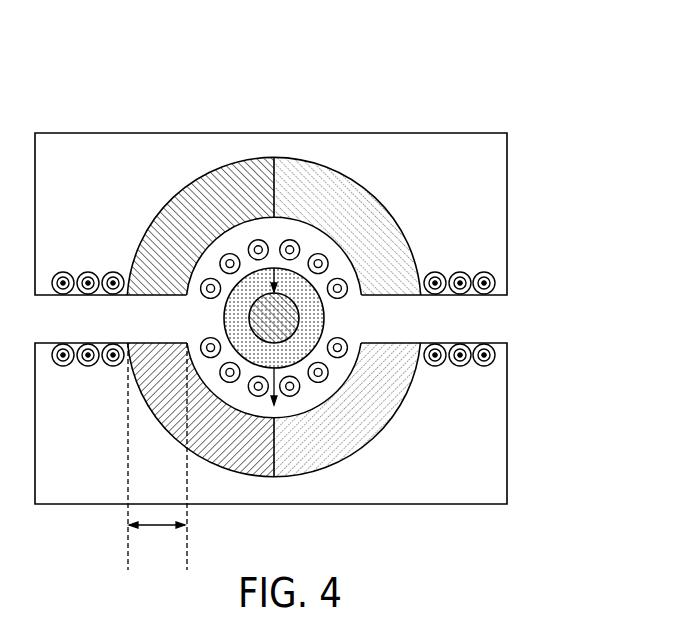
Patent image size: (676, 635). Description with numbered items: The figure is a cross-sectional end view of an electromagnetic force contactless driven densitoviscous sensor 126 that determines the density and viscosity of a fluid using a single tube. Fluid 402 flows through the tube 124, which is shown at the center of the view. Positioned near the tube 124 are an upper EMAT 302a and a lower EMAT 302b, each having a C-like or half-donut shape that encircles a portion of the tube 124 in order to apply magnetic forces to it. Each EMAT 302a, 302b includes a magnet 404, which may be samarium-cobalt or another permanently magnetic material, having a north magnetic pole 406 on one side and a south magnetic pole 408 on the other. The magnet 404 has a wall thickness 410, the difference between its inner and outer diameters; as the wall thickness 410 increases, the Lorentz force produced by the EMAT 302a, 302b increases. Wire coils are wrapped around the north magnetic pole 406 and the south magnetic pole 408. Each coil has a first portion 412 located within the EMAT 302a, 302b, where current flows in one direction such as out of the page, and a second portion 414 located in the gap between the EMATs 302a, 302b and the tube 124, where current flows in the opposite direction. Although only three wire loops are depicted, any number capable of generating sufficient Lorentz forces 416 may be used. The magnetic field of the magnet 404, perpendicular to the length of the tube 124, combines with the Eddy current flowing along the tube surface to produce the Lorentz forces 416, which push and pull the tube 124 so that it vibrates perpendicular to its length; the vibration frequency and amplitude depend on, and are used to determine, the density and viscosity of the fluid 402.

The densitoviscous sensor 126 is at (100, 80).
The EMAT 302a is at (484, 165).
The EMAT 302b is at (484, 473).
The magnet 404 is at (265, 158).
The north magnetic pole 406 is at (153, 250).
The south magnetic pole 408 is at (393, 250).
The wall thickness 410 is at (157, 525).
The first portion 412 is at (500, 283).
The second portion 414 is at (288, 238).
The Lorentz forces 416 is at (281, 279).
The fluid 402 is at (258, 305).
The tube 124 is at (327, 324).